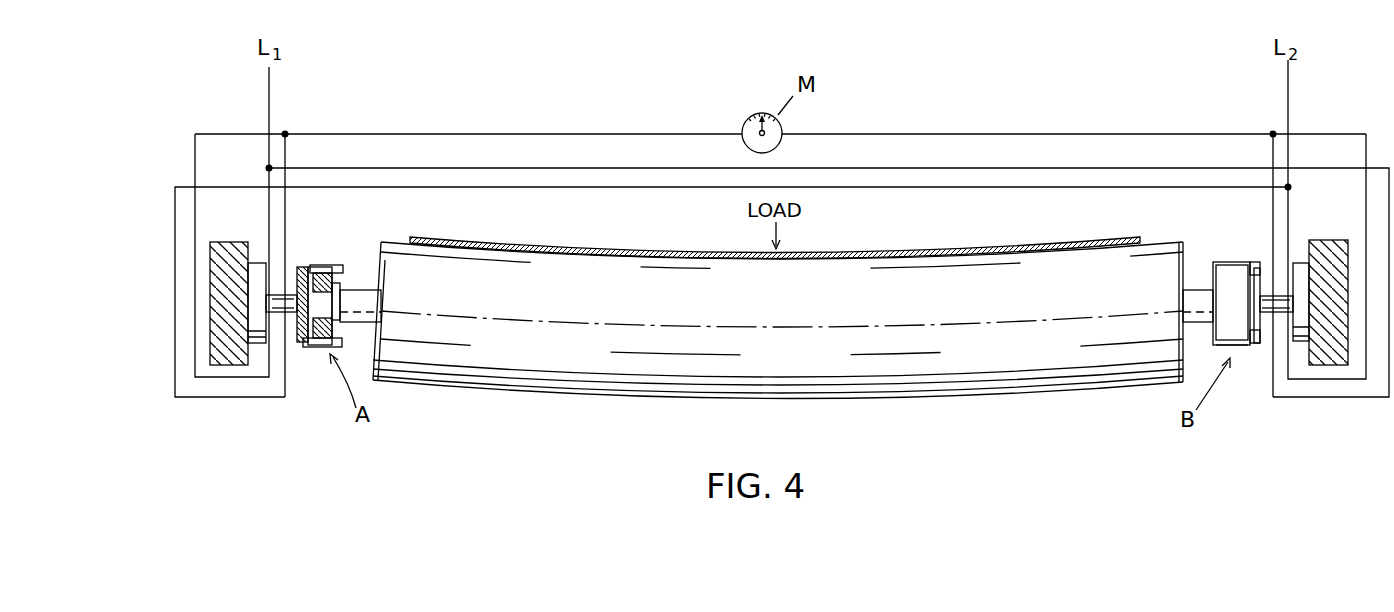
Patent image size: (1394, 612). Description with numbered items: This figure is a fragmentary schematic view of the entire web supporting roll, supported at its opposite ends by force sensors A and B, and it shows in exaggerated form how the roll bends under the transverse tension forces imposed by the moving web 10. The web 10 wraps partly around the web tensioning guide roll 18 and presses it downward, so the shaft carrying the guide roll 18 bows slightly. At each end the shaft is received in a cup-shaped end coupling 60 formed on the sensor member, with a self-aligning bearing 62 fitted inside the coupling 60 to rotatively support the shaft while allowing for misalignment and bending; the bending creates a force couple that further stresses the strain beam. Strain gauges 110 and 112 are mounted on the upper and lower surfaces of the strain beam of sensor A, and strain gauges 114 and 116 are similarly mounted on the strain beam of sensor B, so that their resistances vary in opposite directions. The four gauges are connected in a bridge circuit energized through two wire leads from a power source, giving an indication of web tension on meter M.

The web 10 is at (664, 253).
The web tensioning guide roll 18 is at (394, 241).
The cup-shaped end coupling 60 is at (1217, 258).
The self-aligning bearing 62 is at (346, 285).
The strain gauge 110 is at (278, 296).
The strain gauge 112 is at (280, 314).
The strain gauge 114 is at (1283, 296).
The strain gauge 116 is at (1281, 313).